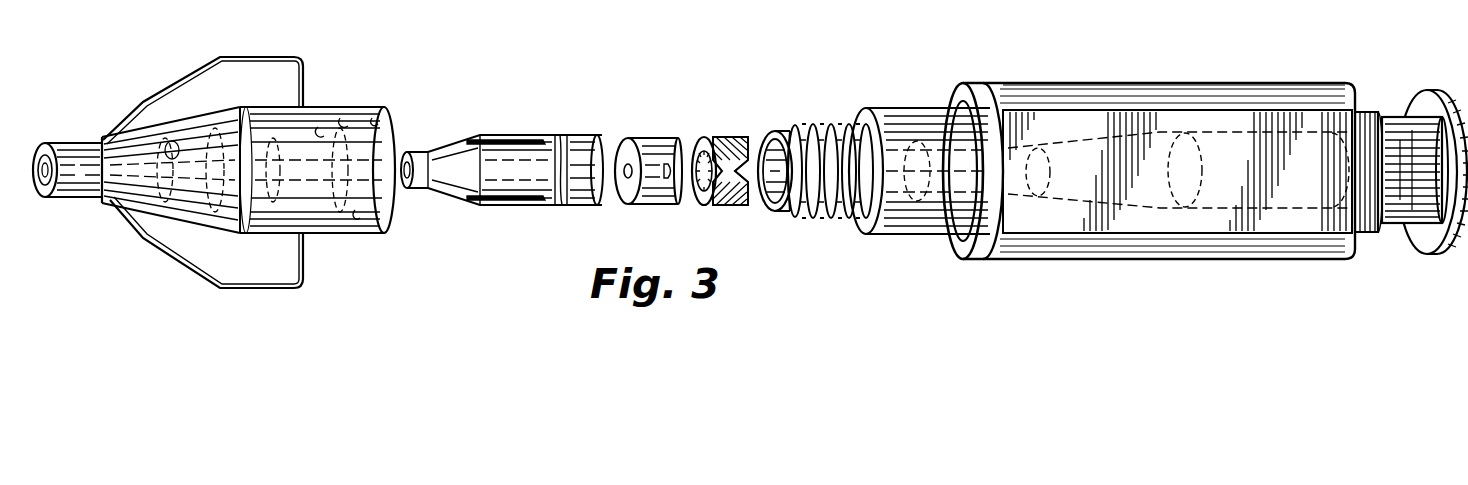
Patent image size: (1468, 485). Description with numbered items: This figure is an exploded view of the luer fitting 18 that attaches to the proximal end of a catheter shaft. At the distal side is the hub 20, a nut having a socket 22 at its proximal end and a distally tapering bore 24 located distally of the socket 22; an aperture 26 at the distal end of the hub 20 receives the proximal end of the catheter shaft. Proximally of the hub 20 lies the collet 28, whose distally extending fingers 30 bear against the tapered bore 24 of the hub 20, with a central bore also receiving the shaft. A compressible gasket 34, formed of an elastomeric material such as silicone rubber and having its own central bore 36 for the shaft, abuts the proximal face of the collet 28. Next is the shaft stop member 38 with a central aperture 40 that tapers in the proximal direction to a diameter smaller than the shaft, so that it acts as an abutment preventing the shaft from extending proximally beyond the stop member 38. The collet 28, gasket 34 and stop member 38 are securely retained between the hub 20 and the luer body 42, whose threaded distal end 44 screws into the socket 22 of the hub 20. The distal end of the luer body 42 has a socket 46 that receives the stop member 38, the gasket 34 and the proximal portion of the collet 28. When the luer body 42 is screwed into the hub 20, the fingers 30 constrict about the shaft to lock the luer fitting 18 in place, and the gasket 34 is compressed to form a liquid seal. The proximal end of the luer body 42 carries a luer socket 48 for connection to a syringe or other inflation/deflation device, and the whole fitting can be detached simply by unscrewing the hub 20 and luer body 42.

The luer fitting 18 is at (1159, 277).
The hub 20 is at (362, 108).
The socket 22 is at (320, 130).
The distally tapering bore 24 is at (177, 130).
The aperture 26 is at (40, 147).
The collet 28 is at (530, 124).
The fingers 30 is at (436, 143).
The compressible gasket 34 is at (652, 197).
The central bore 36 is at (622, 170).
The shaft stop member 38 is at (717, 197).
The central aperture 40 is at (721, 160).
The luer body 42 is at (1120, 85).
The threaded distal end 44 is at (833, 123).
The socket 46 is at (775, 203).
The luer socket 48 is at (1400, 110).